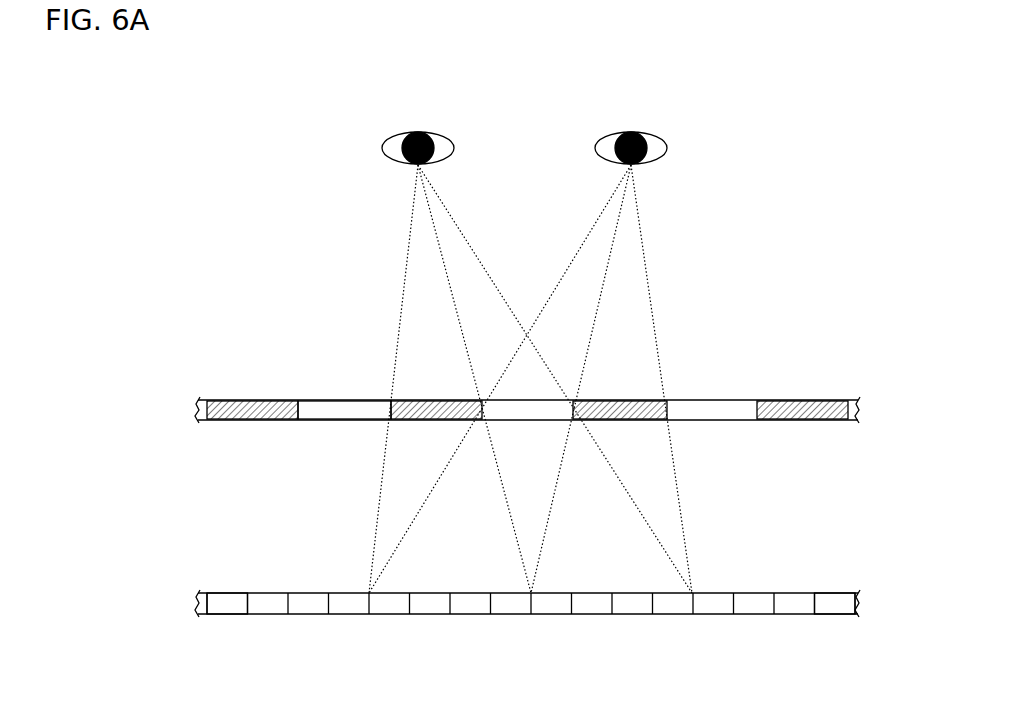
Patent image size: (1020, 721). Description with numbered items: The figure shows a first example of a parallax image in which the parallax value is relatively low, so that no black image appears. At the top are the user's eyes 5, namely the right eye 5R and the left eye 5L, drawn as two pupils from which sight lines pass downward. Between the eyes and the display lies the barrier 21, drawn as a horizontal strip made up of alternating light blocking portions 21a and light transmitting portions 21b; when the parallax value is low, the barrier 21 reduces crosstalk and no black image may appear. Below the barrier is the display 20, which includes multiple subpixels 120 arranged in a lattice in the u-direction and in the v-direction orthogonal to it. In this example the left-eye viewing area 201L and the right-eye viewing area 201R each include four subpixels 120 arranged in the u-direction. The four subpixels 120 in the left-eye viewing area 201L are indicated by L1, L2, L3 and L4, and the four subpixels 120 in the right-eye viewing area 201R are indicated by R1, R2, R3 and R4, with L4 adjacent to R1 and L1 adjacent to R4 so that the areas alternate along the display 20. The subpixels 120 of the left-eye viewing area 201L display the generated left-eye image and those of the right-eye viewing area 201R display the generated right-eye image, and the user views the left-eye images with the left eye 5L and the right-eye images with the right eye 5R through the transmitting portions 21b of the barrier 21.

The eyes 5 is at (598, 78).
The right eye 5R is at (425, 135).
The left eye 5L is at (627, 135).
The barrier 21 is at (195, 408).
The light blocking portion 21a is at (433, 410).
The light transmitting portion 21b is at (343, 410).
The display 20 is at (195, 600).
The subpixel 120 is at (244, 592).
The right-eye viewing area 201R is at (208, 624).
The left-eye viewing area 201L is at (530, 624).